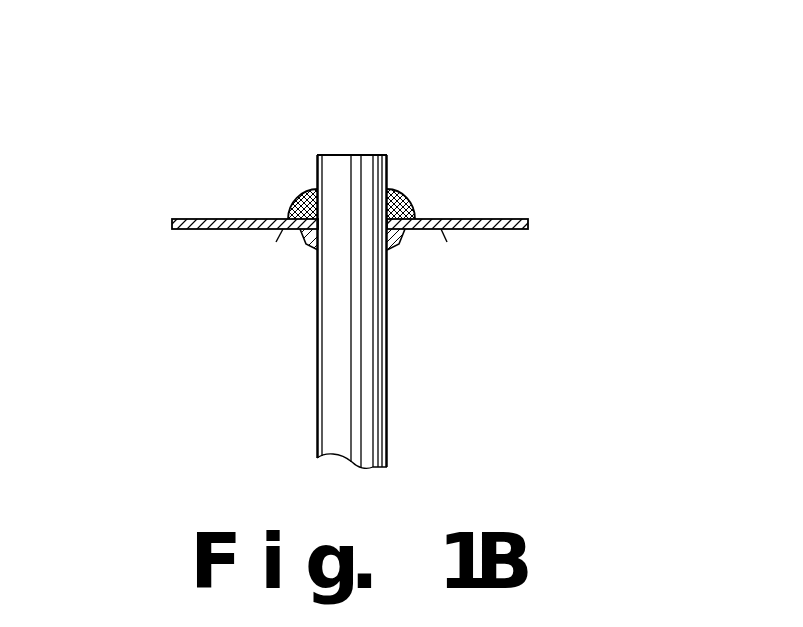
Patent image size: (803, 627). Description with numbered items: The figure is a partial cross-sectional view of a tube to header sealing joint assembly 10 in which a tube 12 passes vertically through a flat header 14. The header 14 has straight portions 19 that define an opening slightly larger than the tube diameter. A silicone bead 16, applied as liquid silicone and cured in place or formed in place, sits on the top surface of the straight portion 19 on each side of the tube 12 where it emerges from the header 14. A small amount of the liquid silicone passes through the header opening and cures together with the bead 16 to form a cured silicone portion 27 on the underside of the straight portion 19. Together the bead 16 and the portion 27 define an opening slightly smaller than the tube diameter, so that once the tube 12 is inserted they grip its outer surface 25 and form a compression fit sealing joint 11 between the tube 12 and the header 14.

The joint assembly 10 is at (406, 118).
The compression fit sealing joint 11 is at (287, 200).
The tube 12 is at (340, 392).
The header 14 is at (230, 219).
The silicone bead 16 is at (405, 198).
The straight portion 19 is at (283, 230).
The outer surface 25 is at (400, 420).
The cured silicone portion 27 is at (312, 238).